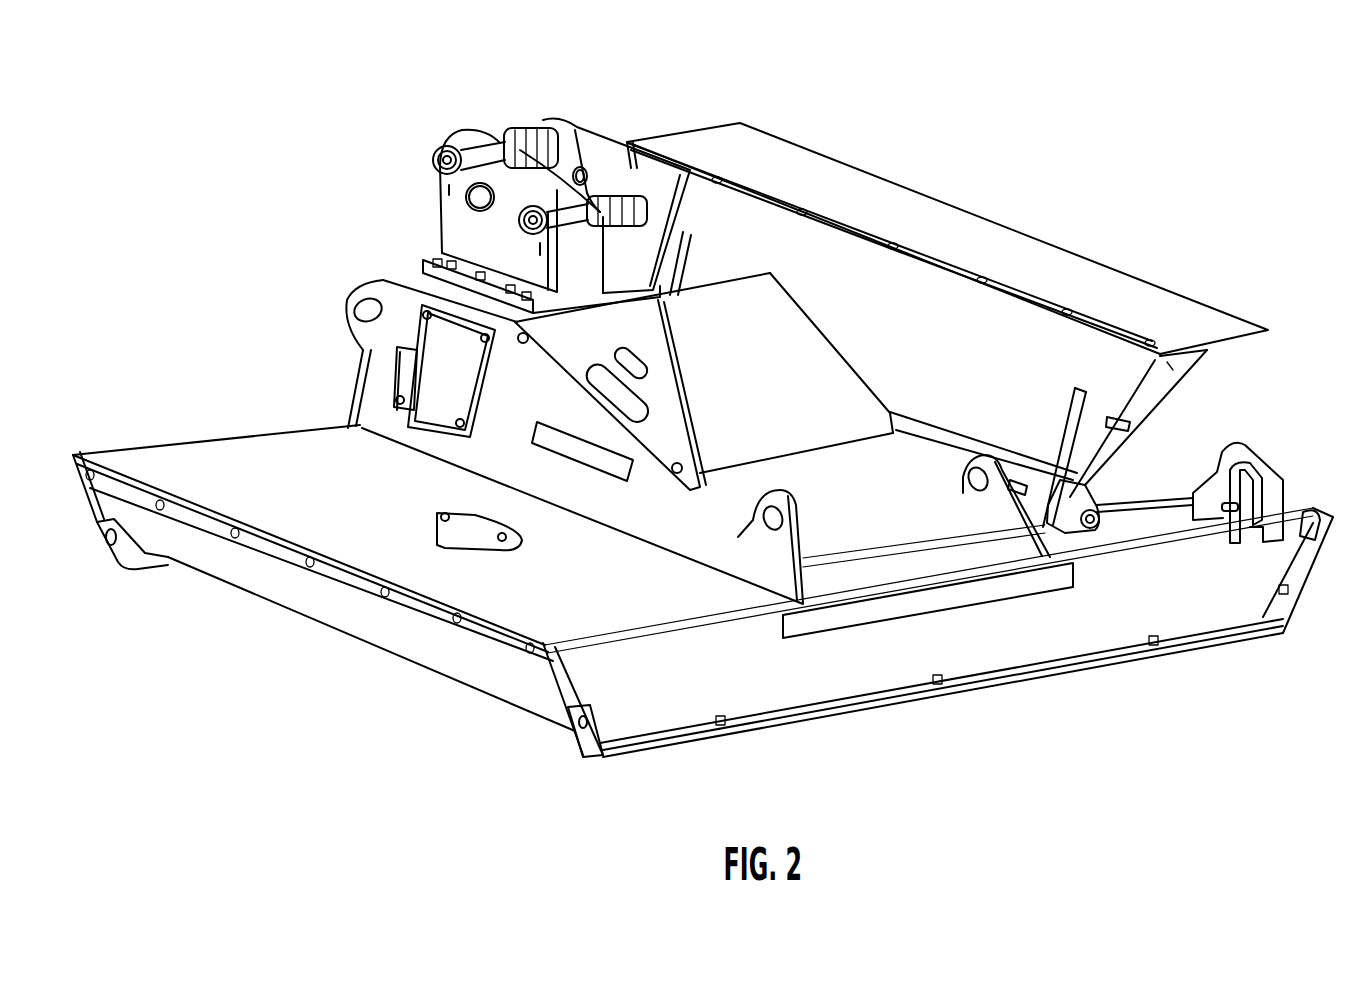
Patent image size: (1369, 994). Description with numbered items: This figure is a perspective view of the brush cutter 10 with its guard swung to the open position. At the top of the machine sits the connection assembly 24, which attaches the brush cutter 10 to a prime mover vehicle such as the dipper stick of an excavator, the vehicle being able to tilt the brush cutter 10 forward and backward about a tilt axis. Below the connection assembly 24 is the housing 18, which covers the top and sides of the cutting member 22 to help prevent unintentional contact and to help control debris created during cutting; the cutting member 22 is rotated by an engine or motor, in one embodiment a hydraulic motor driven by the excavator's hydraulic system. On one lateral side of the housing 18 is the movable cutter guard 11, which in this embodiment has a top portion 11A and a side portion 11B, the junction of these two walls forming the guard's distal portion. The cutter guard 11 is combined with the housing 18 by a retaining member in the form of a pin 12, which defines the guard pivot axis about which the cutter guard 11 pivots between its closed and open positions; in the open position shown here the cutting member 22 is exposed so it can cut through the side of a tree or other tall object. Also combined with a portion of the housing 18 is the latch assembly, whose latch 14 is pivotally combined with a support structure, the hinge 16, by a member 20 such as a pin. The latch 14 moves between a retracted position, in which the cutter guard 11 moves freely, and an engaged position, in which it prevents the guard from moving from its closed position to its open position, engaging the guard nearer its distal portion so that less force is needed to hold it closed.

The brush cutter 10 is at (601, 115).
The cutter guard 11 is at (878, 193).
The top portion 11A is at (798, 252).
The side portion 11B is at (965, 240).
The pin 12 is at (1093, 528).
The latch 14 is at (1208, 402).
The hinge 16 is at (1239, 480).
The housing 18 is at (232, 428).
The member 20 is at (1230, 512).
The cutting member 22 is at (1108, 382).
The connection assembly 24 is at (468, 100).